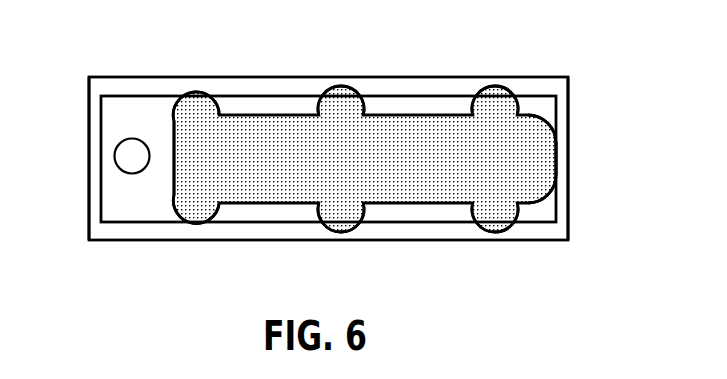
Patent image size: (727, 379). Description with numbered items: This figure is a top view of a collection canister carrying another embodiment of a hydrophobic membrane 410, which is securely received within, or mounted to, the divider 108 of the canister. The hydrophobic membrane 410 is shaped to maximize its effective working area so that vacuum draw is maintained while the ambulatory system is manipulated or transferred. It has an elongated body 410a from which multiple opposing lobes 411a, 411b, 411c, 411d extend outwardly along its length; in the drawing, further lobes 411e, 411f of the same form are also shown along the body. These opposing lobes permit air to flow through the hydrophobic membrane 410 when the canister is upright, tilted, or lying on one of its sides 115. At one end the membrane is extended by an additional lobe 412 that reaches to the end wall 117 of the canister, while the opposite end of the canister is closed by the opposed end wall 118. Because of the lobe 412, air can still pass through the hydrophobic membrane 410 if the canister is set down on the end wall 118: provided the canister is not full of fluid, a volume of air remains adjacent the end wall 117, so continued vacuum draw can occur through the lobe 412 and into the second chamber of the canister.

The divider 108 is at (548, 215).
The sides 115 is at (257, 77).
The end wall 117 is at (567, 158).
The opposed end wall 118 is at (88, 143).
The hydrophobic membrane 410 is at (392, 138).
The body 410a is at (172, 172).
The lobe 411a is at (194, 104).
The lobe 411b is at (339, 102).
The lobe 411c is at (497, 103).
The lobe 411d is at (195, 214).
The fifth lobe 411e is at (338, 218).
The sixth lobe 411f is at (498, 217).
The lobe 412 is at (545, 142).